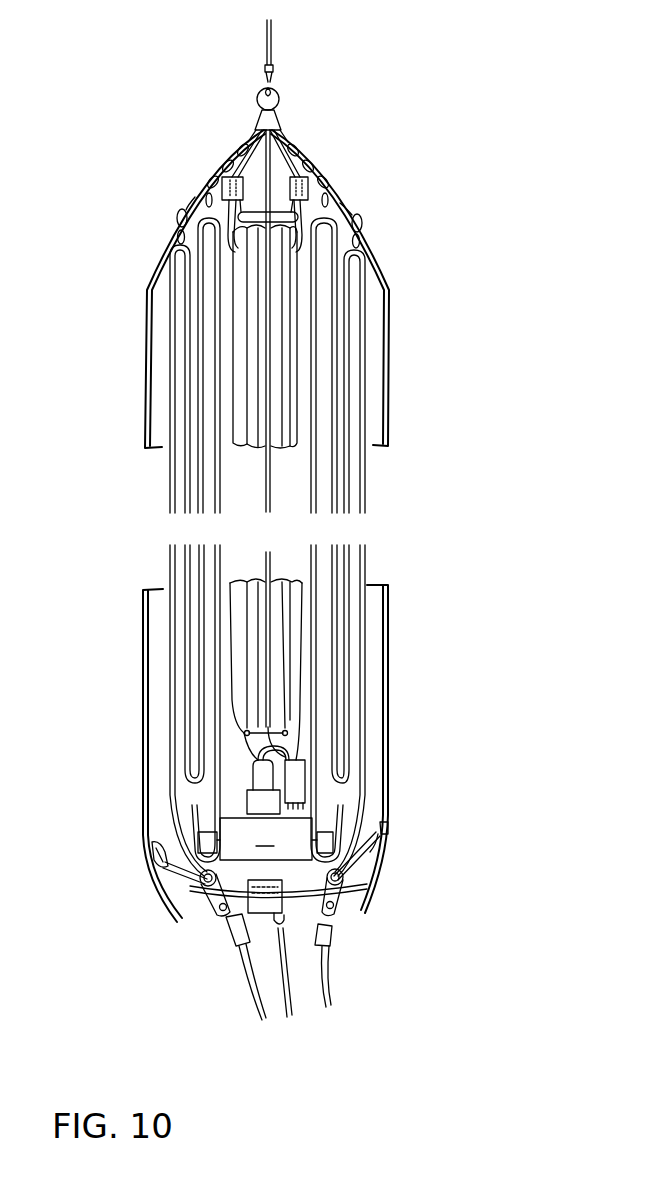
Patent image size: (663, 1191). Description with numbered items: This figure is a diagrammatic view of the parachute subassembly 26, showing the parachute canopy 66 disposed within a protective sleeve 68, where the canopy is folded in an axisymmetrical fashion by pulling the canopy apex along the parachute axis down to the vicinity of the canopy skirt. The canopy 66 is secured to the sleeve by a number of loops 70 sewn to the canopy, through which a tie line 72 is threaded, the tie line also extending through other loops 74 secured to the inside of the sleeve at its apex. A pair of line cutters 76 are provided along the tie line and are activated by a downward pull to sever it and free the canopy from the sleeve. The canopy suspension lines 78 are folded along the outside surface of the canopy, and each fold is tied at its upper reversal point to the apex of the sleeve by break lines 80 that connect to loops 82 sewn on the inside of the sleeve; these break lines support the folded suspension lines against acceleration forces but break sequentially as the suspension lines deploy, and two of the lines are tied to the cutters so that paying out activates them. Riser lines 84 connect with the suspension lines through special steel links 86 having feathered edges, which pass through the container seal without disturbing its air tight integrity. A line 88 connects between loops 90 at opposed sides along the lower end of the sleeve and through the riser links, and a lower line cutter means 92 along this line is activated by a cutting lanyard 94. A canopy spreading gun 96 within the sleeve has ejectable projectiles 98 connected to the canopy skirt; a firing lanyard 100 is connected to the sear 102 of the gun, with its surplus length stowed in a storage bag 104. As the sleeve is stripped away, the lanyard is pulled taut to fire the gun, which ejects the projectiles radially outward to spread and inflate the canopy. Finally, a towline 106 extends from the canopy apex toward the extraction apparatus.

The lamp assembly 26 is at (456, 556).
The parachute canopy 66 is at (293, 387).
The protective sleeve 68 is at (147, 380).
The loops 70 is at (300, 213).
The tie line 72 is at (281, 187).
The loops 74 is at (243, 150).
The line cutters 76 is at (306, 187).
The canopy suspension lines 78 is at (202, 477).
The break lines 80 is at (178, 240).
The loops 82 is at (177, 213).
The riser lines 84 is at (258, 980).
The steel links 86 is at (213, 898).
The line 88 is at (180, 890).
The loops 90 is at (151, 858).
The lower line cutter means 92 is at (282, 900).
The cutting lanyard 94 is at (288, 992).
The canopy spreading gun 96 is at (266, 839).
The projectiles 98 is at (337, 837).
The firing lanyard 100 is at (267, 490).
The sear 102 is at (257, 777).
The storage bag 104 is at (297, 785).
The towline 106 is at (274, 38).